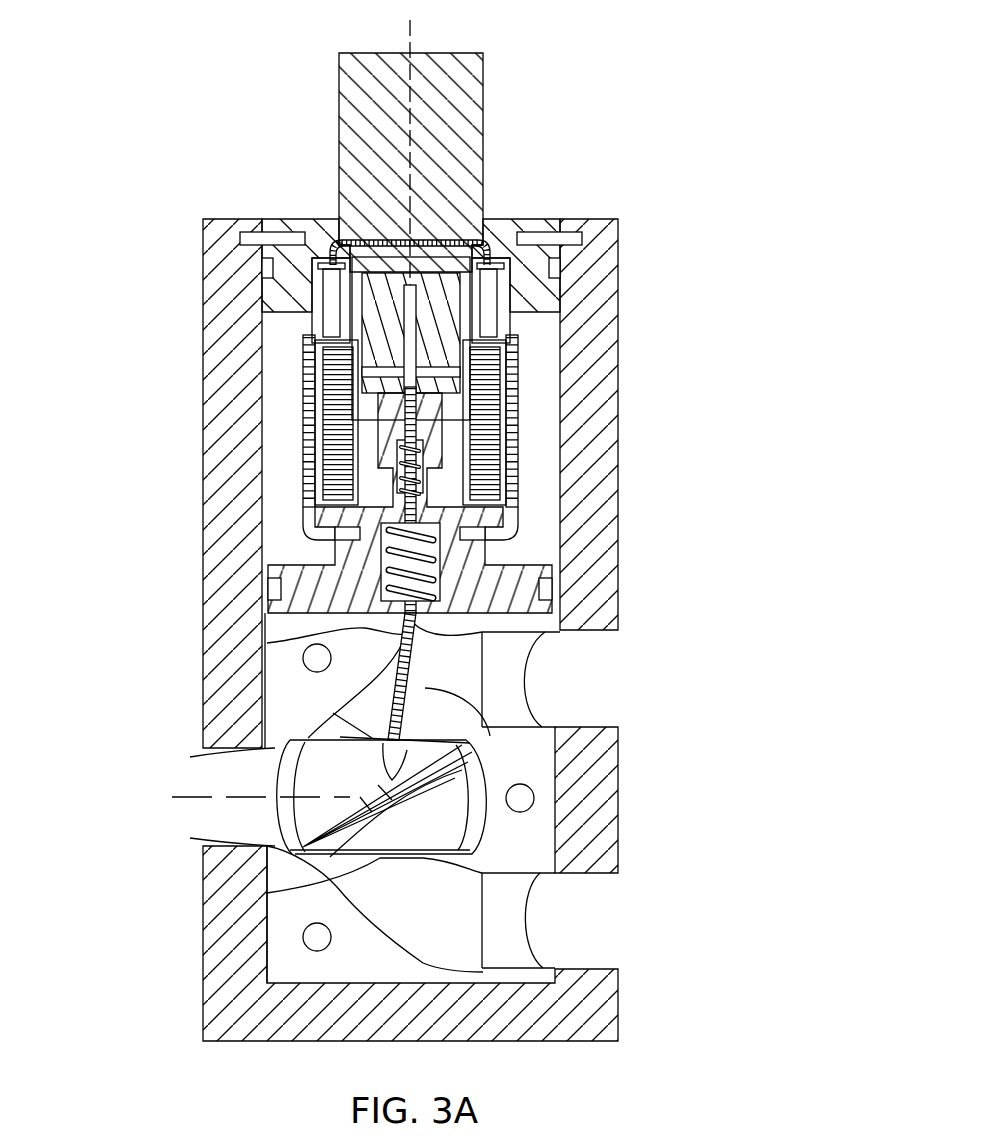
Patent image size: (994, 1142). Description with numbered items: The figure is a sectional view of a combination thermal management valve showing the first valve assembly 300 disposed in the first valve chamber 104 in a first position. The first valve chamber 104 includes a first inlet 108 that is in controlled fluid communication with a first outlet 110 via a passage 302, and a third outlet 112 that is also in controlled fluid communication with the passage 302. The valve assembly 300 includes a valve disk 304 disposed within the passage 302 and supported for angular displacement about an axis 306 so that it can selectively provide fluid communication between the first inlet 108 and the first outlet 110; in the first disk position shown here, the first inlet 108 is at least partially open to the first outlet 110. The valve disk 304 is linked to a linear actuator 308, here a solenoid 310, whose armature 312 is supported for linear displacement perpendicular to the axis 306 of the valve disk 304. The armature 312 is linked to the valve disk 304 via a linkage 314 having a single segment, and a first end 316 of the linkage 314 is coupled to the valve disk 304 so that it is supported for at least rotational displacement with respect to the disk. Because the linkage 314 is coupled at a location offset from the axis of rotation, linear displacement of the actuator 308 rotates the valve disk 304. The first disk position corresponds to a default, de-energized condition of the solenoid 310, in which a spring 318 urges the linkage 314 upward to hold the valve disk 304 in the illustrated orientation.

The first valve assembly 300 is at (270, 163).
The first valve chamber 104 is at (203, 318).
The actuator 308 is at (542, 388).
The solenoid 310 is at (302, 403).
The armature 312 is at (440, 290).
The spring 318 is at (442, 556).
The linkage 314 is at (300, 638).
The first outlet 110 is at (608, 658).
The third outlet 112 is at (608, 900).
The first end 316 is at (413, 722).
The passage 302 is at (275, 750).
The axis 306 is at (350, 795).
The first inlet 108 is at (208, 830).
The valve disk 304 is at (330, 893).